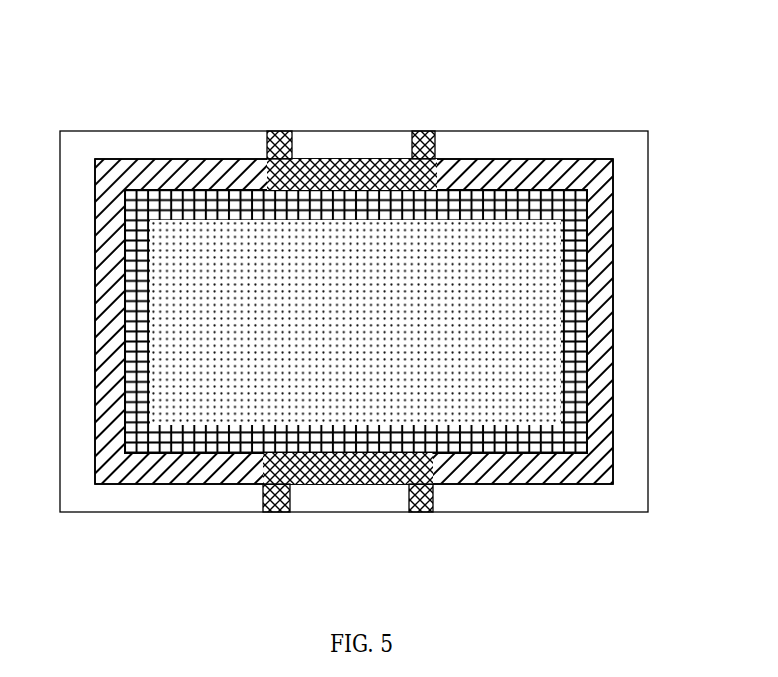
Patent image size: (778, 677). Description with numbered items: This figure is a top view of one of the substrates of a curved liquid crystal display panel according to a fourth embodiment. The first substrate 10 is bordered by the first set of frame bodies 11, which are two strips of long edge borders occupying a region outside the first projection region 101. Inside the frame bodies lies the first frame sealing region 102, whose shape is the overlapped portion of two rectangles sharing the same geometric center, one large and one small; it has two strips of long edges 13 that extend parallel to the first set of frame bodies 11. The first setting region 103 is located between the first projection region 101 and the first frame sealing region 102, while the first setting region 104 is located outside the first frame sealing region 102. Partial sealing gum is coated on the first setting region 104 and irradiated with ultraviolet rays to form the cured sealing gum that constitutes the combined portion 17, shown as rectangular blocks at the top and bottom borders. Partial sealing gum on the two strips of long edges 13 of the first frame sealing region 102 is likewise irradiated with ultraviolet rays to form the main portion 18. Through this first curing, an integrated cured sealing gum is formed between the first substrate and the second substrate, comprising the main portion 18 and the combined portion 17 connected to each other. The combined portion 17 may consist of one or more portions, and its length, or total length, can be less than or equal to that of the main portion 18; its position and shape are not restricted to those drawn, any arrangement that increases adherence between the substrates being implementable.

The first substrate 10 is at (398, 302).
The first set of frame bodies 11 is at (120, 131).
The long edges 13 is at (170, 159).
The combined portion 17 is at (284, 131).
The main portion 18 is at (380, 159).
The first projection region 101 is at (473, 228).
The first frame sealing region 102 is at (613, 177).
The first setting region 103 is at (465, 217).
The first setting region 104 is at (440, 149).